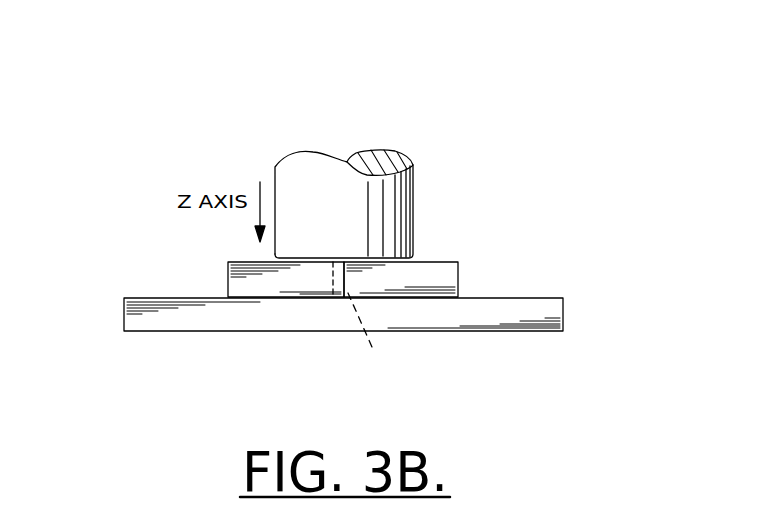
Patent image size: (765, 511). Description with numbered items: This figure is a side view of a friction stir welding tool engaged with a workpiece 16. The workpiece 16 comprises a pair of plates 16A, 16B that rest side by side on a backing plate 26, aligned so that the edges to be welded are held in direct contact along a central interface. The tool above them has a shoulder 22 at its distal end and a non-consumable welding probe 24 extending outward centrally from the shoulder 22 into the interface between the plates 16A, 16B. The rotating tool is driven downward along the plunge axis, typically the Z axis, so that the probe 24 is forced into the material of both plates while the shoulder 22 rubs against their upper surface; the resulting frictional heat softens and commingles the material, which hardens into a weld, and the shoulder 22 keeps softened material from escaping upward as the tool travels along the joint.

The workpiece 16 is at (341, 169).
The plate 16A is at (246, 265).
The plate 16B is at (439, 268).
The shoulder 22 is at (384, 204).
The non-consumable welding probe 24 is at (375, 353).
The backing plate 26 is at (314, 308).